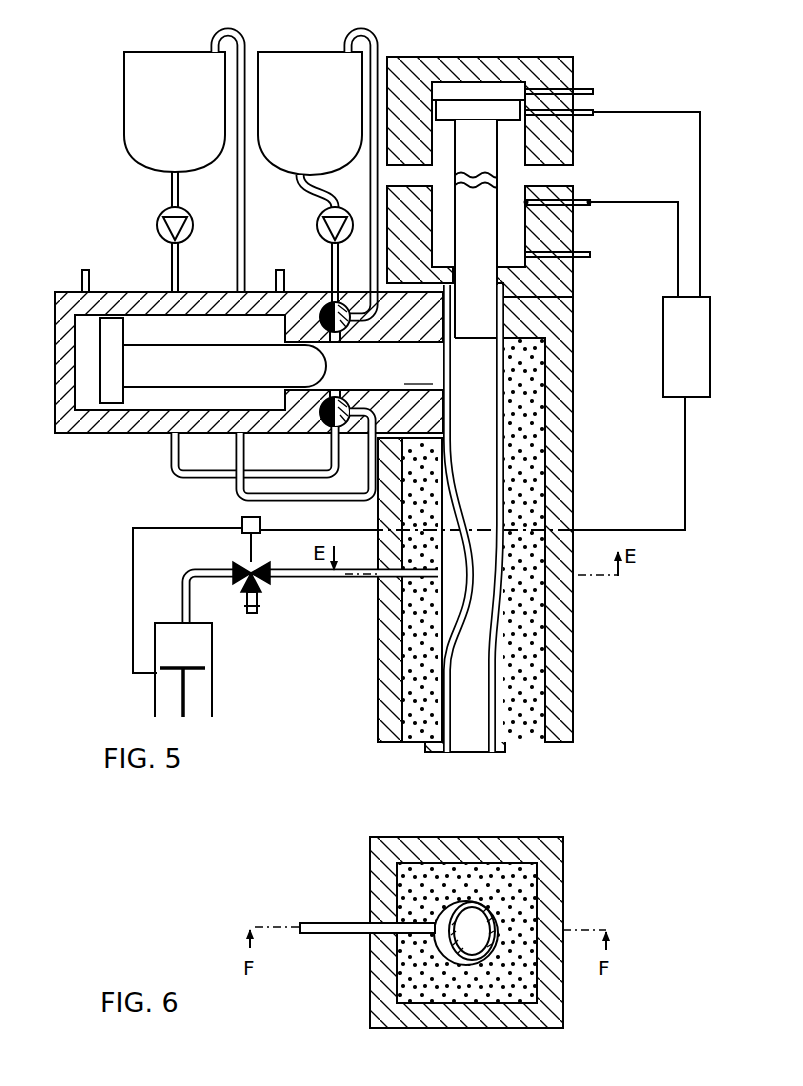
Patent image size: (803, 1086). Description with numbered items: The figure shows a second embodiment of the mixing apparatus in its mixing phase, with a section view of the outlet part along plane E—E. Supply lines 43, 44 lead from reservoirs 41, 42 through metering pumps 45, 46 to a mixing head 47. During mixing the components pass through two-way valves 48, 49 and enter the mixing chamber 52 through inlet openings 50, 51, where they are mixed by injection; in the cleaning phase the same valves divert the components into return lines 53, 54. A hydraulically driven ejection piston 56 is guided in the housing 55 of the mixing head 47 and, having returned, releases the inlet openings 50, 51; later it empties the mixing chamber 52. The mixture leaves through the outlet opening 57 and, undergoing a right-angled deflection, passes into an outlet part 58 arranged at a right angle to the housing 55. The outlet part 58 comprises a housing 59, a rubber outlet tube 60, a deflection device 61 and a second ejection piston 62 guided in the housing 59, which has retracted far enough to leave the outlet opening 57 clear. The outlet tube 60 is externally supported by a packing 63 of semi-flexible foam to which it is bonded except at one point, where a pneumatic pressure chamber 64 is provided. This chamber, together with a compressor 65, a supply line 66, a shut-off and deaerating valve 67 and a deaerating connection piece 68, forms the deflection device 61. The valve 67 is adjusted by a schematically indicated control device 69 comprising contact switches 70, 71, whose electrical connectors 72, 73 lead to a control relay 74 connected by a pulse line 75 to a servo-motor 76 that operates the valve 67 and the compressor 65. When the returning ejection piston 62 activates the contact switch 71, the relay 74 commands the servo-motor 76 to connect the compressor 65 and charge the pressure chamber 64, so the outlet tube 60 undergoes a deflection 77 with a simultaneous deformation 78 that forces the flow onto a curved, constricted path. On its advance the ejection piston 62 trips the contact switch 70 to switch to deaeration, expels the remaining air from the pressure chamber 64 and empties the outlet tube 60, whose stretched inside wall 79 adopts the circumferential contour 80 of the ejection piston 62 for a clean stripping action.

In FIG. 5, the reservoir 41 is at (148, 154).
In FIG. 5, the reservoir 42 is at (300, 158).
In FIG. 5, the supply line 43 is at (172, 192).
In FIG. 5, the supply line 44 is at (322, 195).
In FIG. 5, the metering pump 45 is at (158, 232).
In FIG. 5, the metering pump 46 is at (318, 232).
In FIG. 5, the mixing head 47 is at (573, 60).
In FIG. 5, the two-way valve 48 is at (326, 306).
In FIG. 5, the two-way valve 49 is at (325, 428).
In FIG. 5, the inlet opening 50 is at (332, 346).
In FIG. 5, the inlet opening 51 is at (336, 394).
In FIG. 5, the mixing chamber 52 is at (418, 373).
In FIG. 5, the return line 53 is at (211, 46).
In FIG. 5, the return line 54 is at (345, 47).
In FIG. 5, the housing 55 is at (249, 376).
In FIG. 5, the ejection piston 56 is at (176, 382).
In FIG. 5, the outlet opening 57 is at (452, 366).
In FIG. 5, the outlet part 58 is at (479, 541).
In FIG. 6, the outlet part 58 is at (457, 945).
In FIG. 5, the housing 59 is at (558, 486).
In FIG. 6, the housing 59 is at (378, 873).
In FIG. 5, the outlet tube 60 is at (437, 703).
In FIG. 6, the outlet tube 60 is at (462, 968).
In FIG. 5, the deflection device 61 is at (264, 614).
In FIG. 5, the ejection piston 62 is at (487, 224).
In FIG. 5, the packing 63 is at (523, 456).
In FIG. 6, the packing 63 is at (506, 985).
In FIG. 5, the pneumatic pressure chamber 64 is at (446, 588).
In FIG. 6, the pneumatic pressure chamber 64 is at (440, 942).
In FIG. 5, the compressor 65 is at (214, 700).
In FIG. 5, the supply line 66 is at (184, 607).
In FIG. 6, the supply line 66 is at (340, 927).
In FIG. 5, the shut-off and deaerating valve 67 is at (241, 569).
In FIG. 5, the deaerating connection piece 68 is at (259, 606).
In FIG. 5, the control device 69 is at (655, 370).
In FIG. 5, the contact switch 70 is at (590, 200).
In FIG. 5, the contact switch 71 is at (590, 115).
In FIG. 5, the electrical connector 72 is at (678, 202).
In FIG. 5, the electrical connector 73 is at (700, 132).
In FIG. 5, the control relay 74 is at (663, 305).
In FIG. 5, the pulse line 75 is at (685, 513).
In FIG. 5, the servo-motor 76 is at (243, 522).
In FIG. 5, the deflection 77 is at (503, 540).
In FIG. 6, the deflection 77 is at (493, 924).
In FIG. 5, the deformation 78 is at (496, 588).
In FIG. 6, the deformation 78 is at (446, 958).
In FIG. 5, the inside wall 79 is at (446, 750).
In FIG. 6, the inside wall 79 is at (500, 950).
In FIG. 5, the circumferential contour 80 is at (500, 255).